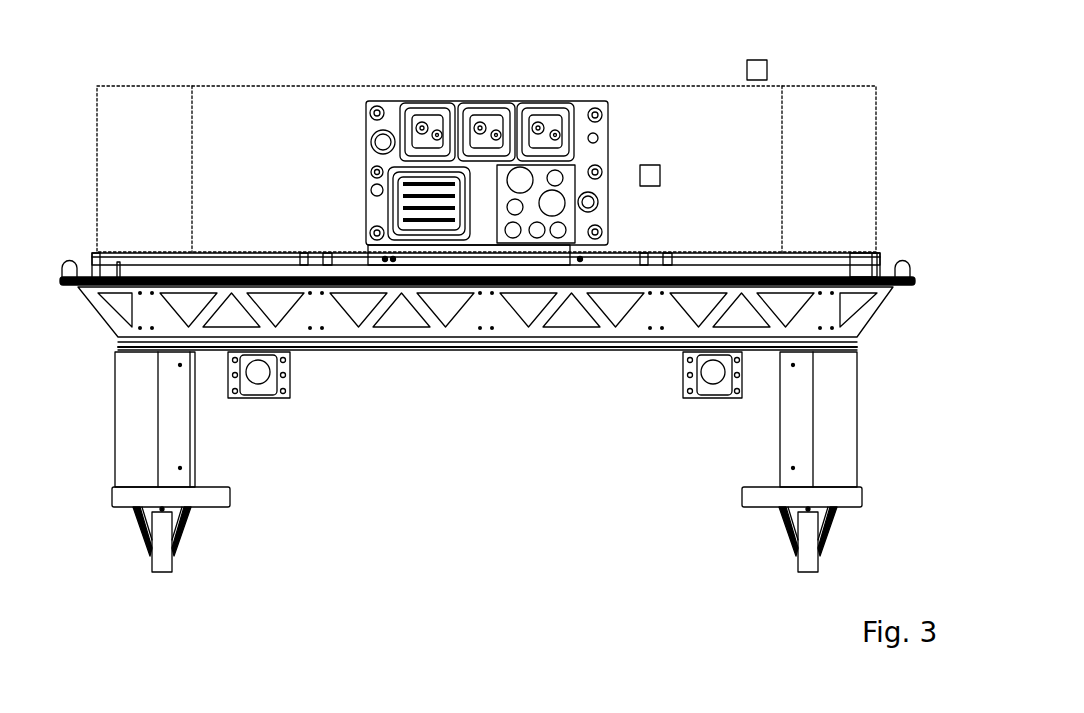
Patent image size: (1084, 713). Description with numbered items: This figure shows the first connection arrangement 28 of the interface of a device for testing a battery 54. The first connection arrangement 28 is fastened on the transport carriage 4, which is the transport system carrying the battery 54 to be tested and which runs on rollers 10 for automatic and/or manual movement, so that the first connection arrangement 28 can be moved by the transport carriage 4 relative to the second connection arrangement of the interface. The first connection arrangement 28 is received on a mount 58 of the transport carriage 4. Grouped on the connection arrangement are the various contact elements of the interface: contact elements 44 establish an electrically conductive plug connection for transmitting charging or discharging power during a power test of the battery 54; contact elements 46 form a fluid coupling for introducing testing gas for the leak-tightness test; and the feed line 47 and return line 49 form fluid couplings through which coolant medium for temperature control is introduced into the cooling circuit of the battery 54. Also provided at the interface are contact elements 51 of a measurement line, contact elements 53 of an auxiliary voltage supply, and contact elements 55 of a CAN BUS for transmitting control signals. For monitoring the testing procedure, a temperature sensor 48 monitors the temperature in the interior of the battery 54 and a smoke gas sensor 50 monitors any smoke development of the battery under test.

The transport carriage 4 is at (238, 300).
The rollers 10 is at (162, 540).
The first connection arrangement 28 is at (416, 96).
The contact elements 44 is at (478, 114).
The contact elements 46 is at (540, 124).
The feed line 47 is at (514, 238).
The temperature sensor 48 is at (650, 165).
The return line 49 is at (538, 238).
The smoke gas sensor 50 is at (752, 60).
The contact elements of a measurement line 51 is at (558, 238).
The contact elements of an auxiliary voltage supply 53 is at (562, 126).
The battery 54 is at (291, 113).
The contact elements of a CAN BUS 55 is at (433, 252).
The mount 58 is at (385, 263).